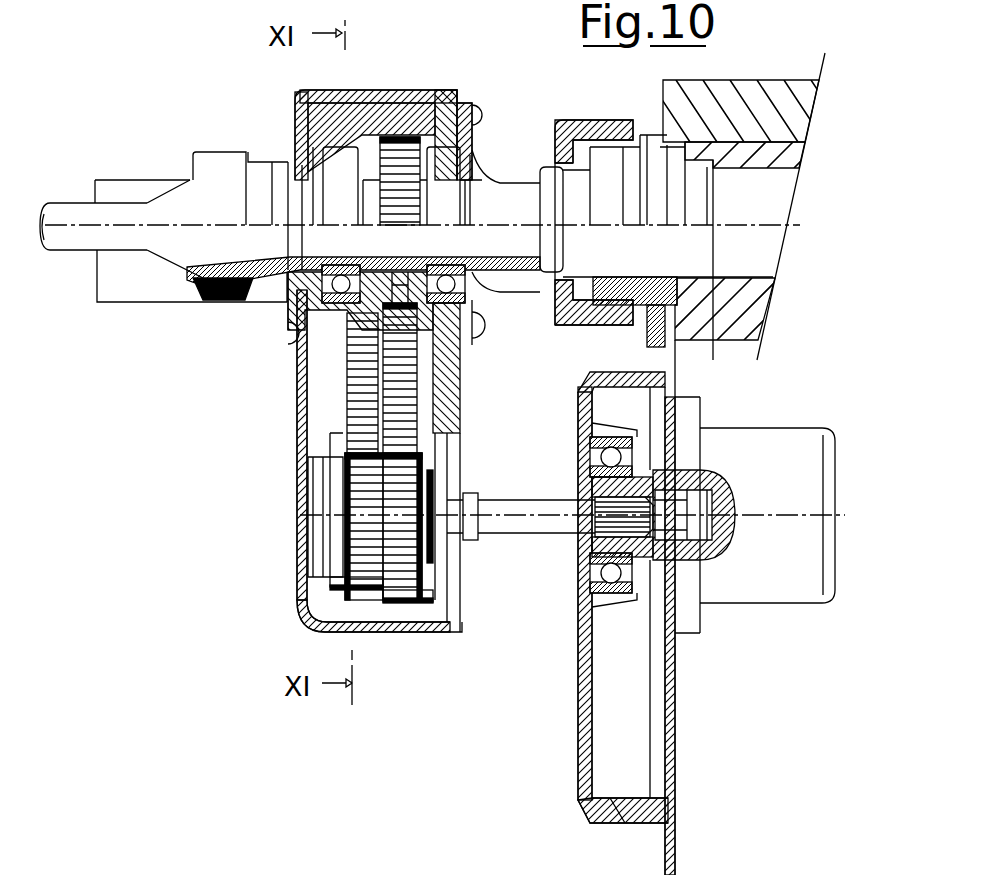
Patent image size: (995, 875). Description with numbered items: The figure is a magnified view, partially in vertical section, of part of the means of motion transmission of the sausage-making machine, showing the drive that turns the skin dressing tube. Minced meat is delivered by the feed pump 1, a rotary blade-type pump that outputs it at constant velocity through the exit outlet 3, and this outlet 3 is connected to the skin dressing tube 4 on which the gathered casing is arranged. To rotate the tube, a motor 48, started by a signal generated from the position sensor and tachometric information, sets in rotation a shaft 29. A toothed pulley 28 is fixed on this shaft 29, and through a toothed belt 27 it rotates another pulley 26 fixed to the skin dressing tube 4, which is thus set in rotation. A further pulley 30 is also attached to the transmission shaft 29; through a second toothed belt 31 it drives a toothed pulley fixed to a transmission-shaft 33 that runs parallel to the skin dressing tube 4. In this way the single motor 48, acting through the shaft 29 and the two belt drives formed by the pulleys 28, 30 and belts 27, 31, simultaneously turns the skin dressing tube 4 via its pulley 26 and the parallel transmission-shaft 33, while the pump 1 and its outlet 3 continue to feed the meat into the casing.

The feed pump 1 is at (752, 74).
The exit outlet 3 is at (607, 157).
The skin dressing tube 4 is at (70, 212).
The pulley 26 is at (402, 163).
The toothed belt 27 is at (402, 423).
The toothed pulley 28 is at (402, 552).
The shaft 29 is at (543, 523).
The pulley 30 is at (358, 550).
The toothed belt 31 is at (367, 425).
The transmission-shaft 33 is at (130, 865).
The motor 48 is at (783, 570).